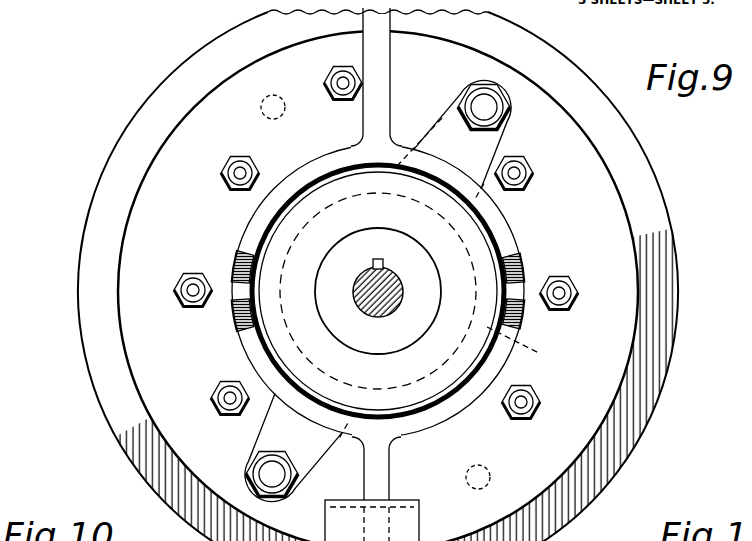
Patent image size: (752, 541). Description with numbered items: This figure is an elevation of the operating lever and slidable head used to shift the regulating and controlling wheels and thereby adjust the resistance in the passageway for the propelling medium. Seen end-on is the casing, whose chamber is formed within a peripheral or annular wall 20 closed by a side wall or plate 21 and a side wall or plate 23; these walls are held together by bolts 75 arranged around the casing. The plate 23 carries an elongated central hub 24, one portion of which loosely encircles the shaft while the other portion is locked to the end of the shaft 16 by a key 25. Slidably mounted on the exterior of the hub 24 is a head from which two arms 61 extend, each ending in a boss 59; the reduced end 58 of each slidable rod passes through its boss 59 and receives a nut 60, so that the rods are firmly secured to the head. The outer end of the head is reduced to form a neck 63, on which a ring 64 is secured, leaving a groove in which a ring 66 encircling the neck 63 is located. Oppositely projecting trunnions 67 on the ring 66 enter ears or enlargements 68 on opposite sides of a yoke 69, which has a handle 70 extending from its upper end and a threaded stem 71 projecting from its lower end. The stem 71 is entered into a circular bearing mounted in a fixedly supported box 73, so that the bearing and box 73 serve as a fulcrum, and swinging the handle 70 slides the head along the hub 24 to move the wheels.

The shaft 16 is at (389, 298).
The peripheral or annular wall 20 is at (670, 246).
The side wall or plate 21 is at (77, 266).
The side wall or plate 23 is at (397, 380).
The elongated central hub 24 is at (362, 305).
The key 25 is at (383, 265).
The reduced end 58 is at (493, 93).
The boss 59 is at (511, 108).
The nut 60 is at (472, 96).
The arm 61 is at (378, 290).
The neck 63 is at (460, 238).
The ring 64 is at (470, 195).
The ring 66 is at (518, 263).
The trunnions 67 is at (232, 312).
The ears or enlargements 68 is at (232, 258).
The yoke 69 is at (254, 212).
The handle 70 is at (391, 110).
The threaded stem 71 is at (365, 471).
The box 73 is at (372, 520).
The bolts 75 is at (254, 168).